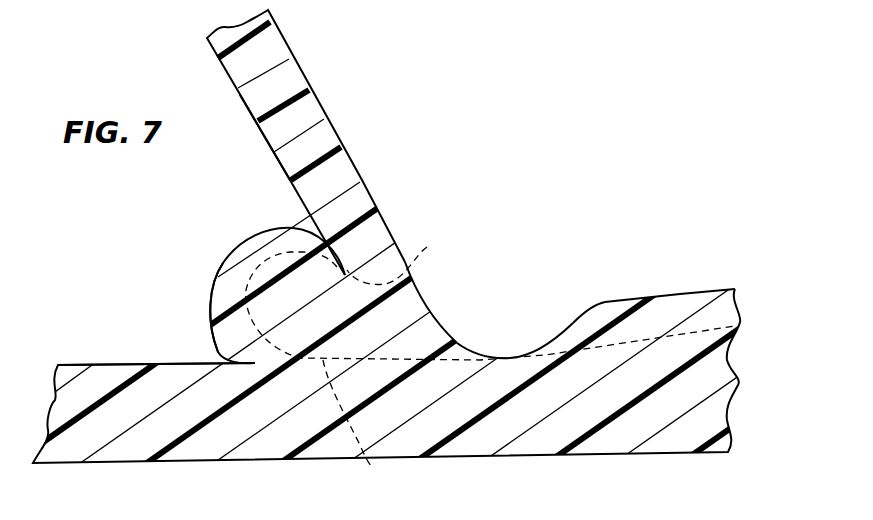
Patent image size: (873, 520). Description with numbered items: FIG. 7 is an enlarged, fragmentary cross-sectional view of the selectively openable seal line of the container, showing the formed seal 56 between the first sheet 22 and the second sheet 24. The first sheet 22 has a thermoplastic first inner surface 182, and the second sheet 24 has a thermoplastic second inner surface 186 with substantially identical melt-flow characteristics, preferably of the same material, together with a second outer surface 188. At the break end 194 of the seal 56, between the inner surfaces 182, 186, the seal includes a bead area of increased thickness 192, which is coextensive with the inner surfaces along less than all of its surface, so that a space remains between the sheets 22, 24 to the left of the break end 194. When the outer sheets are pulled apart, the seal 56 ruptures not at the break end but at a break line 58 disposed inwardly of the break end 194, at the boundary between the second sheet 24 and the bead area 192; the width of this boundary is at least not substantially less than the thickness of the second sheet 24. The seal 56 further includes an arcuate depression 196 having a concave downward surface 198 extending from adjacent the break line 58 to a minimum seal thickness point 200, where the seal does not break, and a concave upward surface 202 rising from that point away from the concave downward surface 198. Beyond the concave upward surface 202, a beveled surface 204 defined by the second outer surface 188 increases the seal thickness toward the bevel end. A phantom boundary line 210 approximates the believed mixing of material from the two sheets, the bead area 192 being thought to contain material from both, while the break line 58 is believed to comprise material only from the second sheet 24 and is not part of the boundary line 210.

The first sheet 22 is at (100, 457).
The second sheet 24 is at (287, 72).
The formed seal 56 is at (560, 127).
The break line 58 is at (490, 297).
The first inner surface 182 is at (120, 363).
The second inner surface 186 is at (270, 147).
The second outer surface 188 is at (716, 290).
The bead area of increased thickness 192 is at (223, 260).
The break end 194 is at (212, 300).
The arcuate depression 196 is at (493, 308).
The concave downward surface 198 is at (413, 290).
The minimum seal thickness point 200 is at (502, 358).
The concave upward surface 202 is at (572, 322).
The beveled surface 204 is at (648, 298).
The phantom boundary line 210 is at (372, 467).